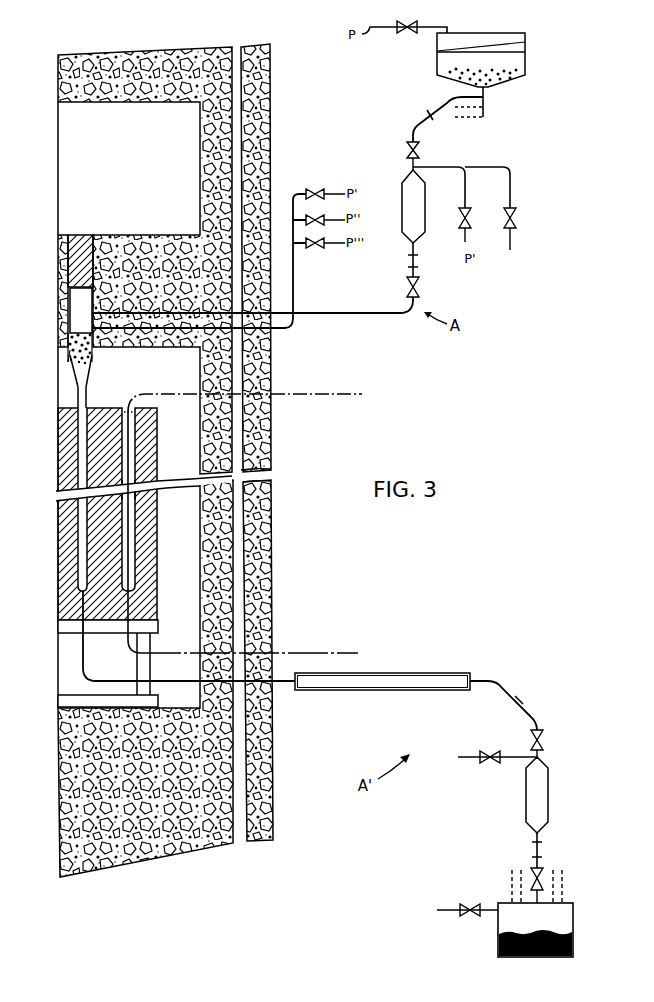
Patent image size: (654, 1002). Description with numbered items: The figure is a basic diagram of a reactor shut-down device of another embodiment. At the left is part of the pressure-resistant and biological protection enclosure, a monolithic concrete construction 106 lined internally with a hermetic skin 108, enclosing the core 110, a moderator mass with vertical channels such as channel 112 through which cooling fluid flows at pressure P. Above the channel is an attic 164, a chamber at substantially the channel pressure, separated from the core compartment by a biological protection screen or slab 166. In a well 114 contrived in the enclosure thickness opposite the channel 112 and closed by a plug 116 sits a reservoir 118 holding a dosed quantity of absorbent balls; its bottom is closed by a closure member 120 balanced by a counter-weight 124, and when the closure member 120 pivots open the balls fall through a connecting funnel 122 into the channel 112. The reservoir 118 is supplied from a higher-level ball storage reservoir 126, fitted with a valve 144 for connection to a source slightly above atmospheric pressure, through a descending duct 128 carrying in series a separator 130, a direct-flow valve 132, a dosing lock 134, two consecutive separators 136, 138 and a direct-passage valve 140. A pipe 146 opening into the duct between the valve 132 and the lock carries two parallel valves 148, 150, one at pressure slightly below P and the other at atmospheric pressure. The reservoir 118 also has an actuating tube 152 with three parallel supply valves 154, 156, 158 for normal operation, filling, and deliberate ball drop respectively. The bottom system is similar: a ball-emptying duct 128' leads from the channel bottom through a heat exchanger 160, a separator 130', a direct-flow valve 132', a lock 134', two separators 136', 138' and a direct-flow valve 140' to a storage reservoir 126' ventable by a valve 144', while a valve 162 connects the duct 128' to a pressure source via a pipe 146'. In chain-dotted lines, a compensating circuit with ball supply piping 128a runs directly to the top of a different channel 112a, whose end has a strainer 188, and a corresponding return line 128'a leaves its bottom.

The monolithic concrete construction 106 is at (212, 598).
The hermetic skin 108 is at (207, 618).
The core 110 is at (150, 567).
The vertical channel 112 is at (82, 576).
The channel 112a is at (130, 524).
The well 114 is at (74, 312).
The plug 116 is at (85, 236).
The reservoir 118 is at (70, 342).
The closure member 120 is at (89, 359).
The connecting funnel 122 is at (88, 380).
The counter-weight 124 is at (70, 366).
The ball storage reservoir 126 is at (456, 60).
The storage reservoir 126' is at (514, 913).
The duct 128 is at (287, 205).
The ball-emptying duct 128' is at (310, 660).
The ball supply piping 128a is at (298, 394).
The auxiliary return conduit 128'a is at (249, 642).
The separator 130 is at (433, 103).
The separator 130' is at (499, 700).
The direct-flow valve 132 is at (396, 153).
The direct-flow valve 132' is at (517, 742).
The dosing lock 134 is at (413, 206).
The lock 134' is at (537, 795).
The separator 136 is at (395, 253).
The separator 136' is at (516, 841).
The separator 138 is at (395, 271).
The separator 138' is at (516, 859).
The direct-passage valve 140 is at (429, 281).
The direct-flow valve 140' is at (554, 874).
The valve 144 is at (404, 38).
The valve 144' is at (467, 898).
The pipe 146 is at (461, 174).
The pipe 146' is at (497, 774).
The valve 148 is at (462, 216).
The valve 150 is at (506, 216).
The actuating tube 152 is at (294, 298).
The supply valve 154 is at (310, 192).
The supply valve 156 is at (310, 218).
The supply valve 158 is at (310, 241).
The heat exchanger 160 is at (355, 685).
The valve 162 is at (483, 763).
The attic 164 is at (110, 185).
The biological protection screen or slab 166 is at (167, 250).
The strainer 188 is at (135, 416).